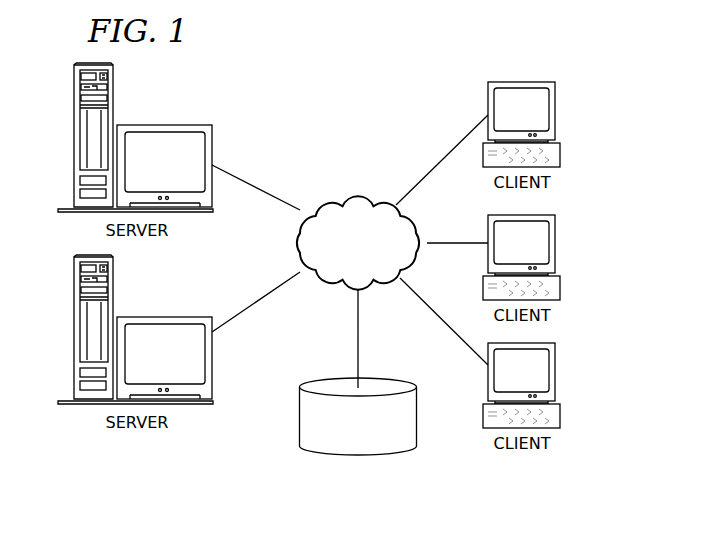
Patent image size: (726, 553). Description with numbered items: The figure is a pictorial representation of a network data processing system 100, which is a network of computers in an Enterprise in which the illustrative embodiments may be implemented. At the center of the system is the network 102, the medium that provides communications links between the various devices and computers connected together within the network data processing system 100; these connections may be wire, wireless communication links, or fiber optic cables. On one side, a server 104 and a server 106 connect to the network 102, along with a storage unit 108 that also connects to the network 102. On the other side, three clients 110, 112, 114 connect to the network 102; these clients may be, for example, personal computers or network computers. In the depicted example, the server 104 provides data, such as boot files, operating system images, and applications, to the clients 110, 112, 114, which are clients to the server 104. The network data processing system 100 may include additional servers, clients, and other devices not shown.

The network data processing system 100 is at (402, 94).
The network 102 is at (328, 196).
The server 104 is at (74, 140).
The server 106 is at (74, 332).
The storage unit 108 is at (340, 455).
The client 110 is at (555, 112).
The client 112 is at (555, 245).
The client 114 is at (555, 372).